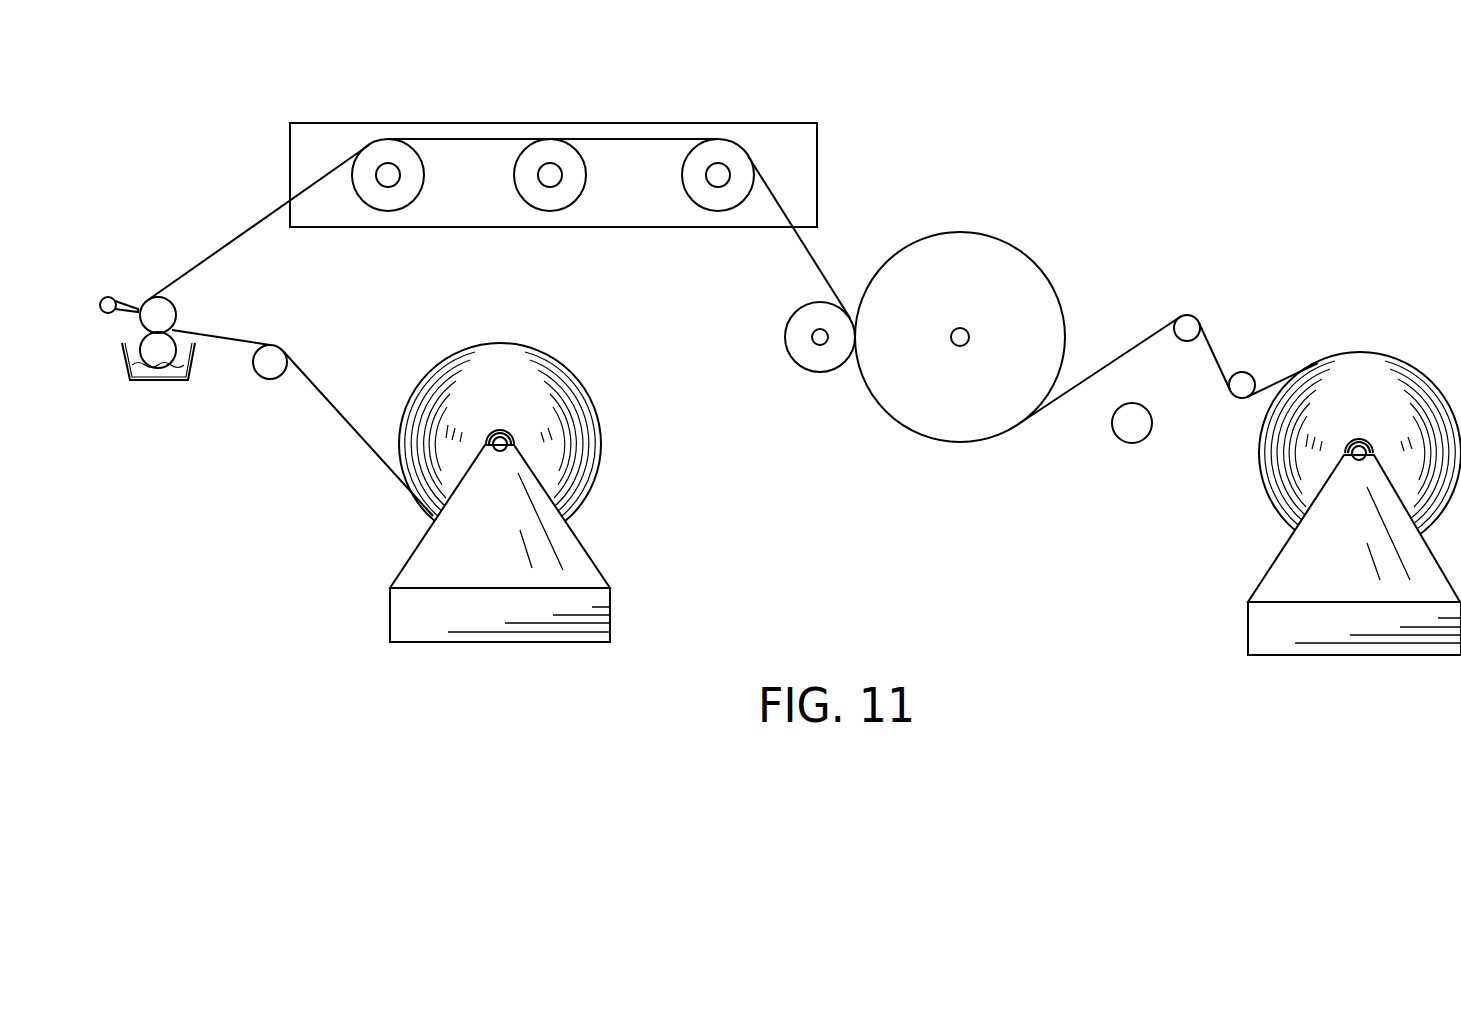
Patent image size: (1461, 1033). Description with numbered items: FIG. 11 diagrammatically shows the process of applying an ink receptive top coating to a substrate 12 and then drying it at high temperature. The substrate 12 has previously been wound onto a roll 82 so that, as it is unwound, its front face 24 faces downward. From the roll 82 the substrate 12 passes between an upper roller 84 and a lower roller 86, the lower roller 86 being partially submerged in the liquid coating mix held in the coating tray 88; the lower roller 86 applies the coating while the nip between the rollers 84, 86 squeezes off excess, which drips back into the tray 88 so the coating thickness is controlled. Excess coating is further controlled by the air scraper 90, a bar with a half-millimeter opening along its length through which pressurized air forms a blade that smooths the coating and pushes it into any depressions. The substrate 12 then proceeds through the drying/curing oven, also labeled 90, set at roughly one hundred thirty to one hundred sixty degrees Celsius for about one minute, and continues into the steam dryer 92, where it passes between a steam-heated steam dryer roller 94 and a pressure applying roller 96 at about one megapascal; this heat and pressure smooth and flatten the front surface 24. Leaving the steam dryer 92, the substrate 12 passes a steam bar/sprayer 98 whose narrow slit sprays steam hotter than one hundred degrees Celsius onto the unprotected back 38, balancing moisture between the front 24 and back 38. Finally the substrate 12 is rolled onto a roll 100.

The substrate 12 is at (358, 438).
The front face 24 is at (320, 407).
The back 38 is at (346, 388).
The roll 82 is at (523, 380).
The upper roller 84 is at (168, 315).
The lower roller 86 is at (150, 352).
The coating tray 88 is at (165, 383).
The air scraper 90 is at (775, 123).
The steam dryer 92 is at (930, 172).
The steam dryer roller 94 is at (973, 291).
The pressure applying roller 96 is at (822, 372).
The steam bar/sprayer 98 is at (1138, 432).
The roll 100 is at (1382, 378).